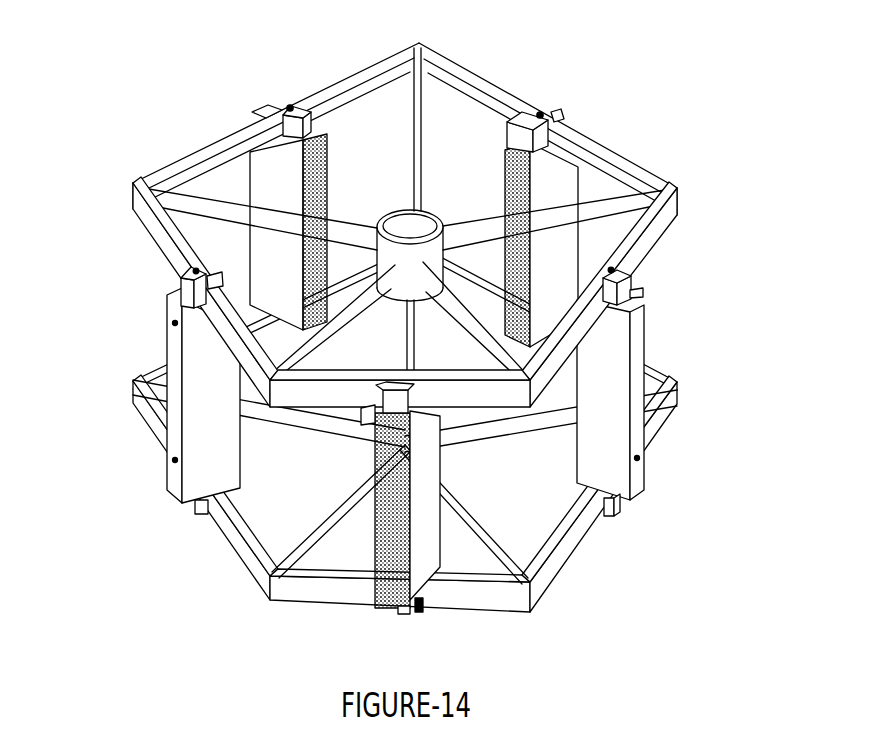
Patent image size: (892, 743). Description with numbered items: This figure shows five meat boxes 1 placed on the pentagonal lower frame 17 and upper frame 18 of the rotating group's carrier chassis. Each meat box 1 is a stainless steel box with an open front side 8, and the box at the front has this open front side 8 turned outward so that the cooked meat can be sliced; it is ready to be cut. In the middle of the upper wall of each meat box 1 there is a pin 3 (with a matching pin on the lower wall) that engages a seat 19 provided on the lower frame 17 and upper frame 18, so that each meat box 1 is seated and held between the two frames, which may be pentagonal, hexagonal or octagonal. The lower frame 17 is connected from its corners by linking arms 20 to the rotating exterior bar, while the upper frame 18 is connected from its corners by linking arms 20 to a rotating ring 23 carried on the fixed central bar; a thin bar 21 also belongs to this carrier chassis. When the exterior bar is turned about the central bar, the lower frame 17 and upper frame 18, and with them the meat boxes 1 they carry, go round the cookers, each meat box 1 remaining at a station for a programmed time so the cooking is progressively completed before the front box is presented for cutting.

The meat box 1 is at (277, 163).
The pin 3 is at (293, 104).
The open front side of the meat box 8 is at (423, 607).
The lower frame 17 is at (530, 600).
The upper frame 18 is at (678, 192).
The seat 19 is at (282, 102).
The linking arms 20 is at (303, 537).
The thin bar 21 is at (474, 220).
The rotating ring 23 is at (400, 215).